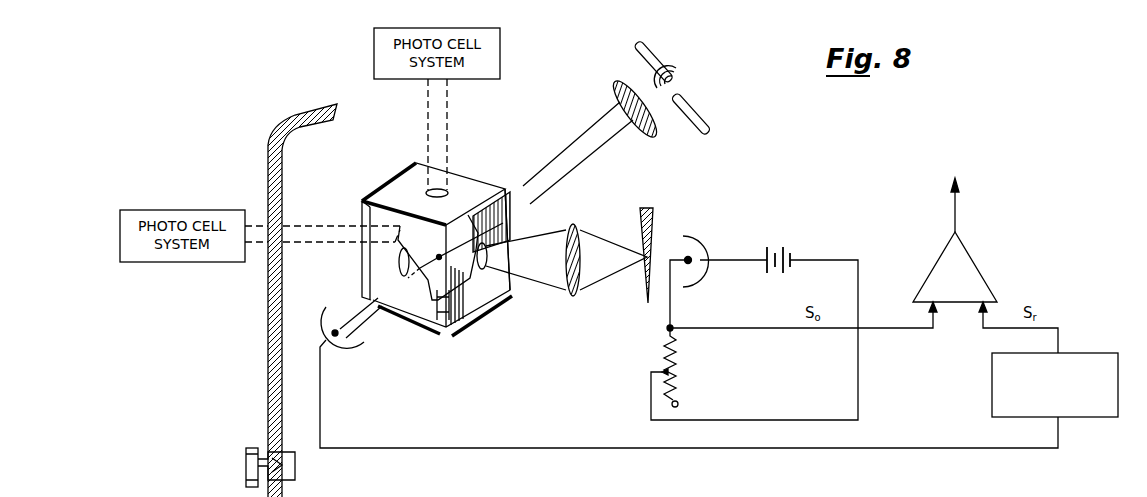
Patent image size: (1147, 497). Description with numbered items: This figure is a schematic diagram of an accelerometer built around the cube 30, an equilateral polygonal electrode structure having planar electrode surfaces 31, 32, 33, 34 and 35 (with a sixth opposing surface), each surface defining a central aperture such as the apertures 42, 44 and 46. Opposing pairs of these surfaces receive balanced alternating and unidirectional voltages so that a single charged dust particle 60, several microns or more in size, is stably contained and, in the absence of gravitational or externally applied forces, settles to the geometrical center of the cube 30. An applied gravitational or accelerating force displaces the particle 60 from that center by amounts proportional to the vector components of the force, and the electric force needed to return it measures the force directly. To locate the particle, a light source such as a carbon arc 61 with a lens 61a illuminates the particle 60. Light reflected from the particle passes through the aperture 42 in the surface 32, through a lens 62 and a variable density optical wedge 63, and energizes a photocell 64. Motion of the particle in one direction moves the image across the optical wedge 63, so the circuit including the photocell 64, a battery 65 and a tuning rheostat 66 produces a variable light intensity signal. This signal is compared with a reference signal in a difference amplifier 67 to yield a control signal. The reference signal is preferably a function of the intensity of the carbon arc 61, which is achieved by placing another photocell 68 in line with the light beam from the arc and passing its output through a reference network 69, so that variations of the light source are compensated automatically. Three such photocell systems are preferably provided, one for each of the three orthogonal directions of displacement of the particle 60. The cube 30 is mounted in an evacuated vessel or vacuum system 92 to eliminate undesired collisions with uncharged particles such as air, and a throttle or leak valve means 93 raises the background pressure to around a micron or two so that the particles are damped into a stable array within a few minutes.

The cube 30 is at (374, 152).
The planar electrode surface 31 is at (456, 155).
The planar electrode surface 32 is at (512, 290).
The planar electrode surface 33 is at (425, 322).
The planar electrode surface 34 is at (372, 197).
The planar electrode surface 35 is at (478, 320).
The central aperture 42 is at (496, 246).
The central aperture 44 is at (368, 263).
The central aperture 46 is at (462, 185).
The charged dust particle 60 is at (439, 257).
The carbon arc 61 is at (692, 90).
The lens 61a is at (620, 90).
The lens 62 is at (575, 235).
The optical wedge 63 is at (655, 212).
The photocell 64 is at (697, 246).
The battery 65 is at (789, 247).
The tuning rheostat 66 is at (682, 372).
The difference amplifier 67 is at (963, 258).
The photocell 68 is at (345, 343).
The reference network 69 is at (1079, 353).
The vacuum system 92 is at (269, 370).
The throttle valve means 93 is at (256, 452).